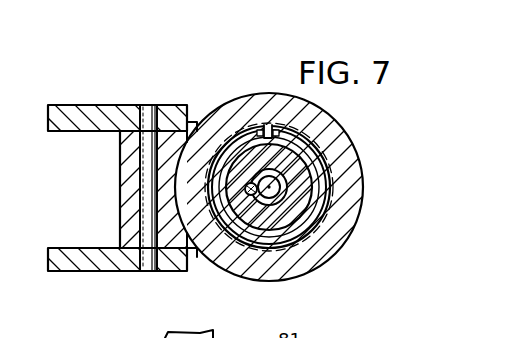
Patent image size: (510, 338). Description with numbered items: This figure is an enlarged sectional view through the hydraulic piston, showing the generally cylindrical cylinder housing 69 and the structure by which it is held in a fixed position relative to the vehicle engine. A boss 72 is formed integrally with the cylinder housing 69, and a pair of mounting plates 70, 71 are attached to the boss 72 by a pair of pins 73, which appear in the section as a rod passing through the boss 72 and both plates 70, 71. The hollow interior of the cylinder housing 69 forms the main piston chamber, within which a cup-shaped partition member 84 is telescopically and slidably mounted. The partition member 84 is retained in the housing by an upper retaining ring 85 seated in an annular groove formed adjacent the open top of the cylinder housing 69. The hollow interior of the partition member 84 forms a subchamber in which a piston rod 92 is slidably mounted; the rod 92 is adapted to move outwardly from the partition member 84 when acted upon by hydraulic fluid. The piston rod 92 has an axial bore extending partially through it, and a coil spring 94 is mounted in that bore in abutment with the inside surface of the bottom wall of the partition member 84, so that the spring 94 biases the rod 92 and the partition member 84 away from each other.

The cylinder housing 69 is at (332, 228).
The mounting plate 70 is at (62, 263).
The mounting plate 71 is at (77, 108).
The boss 72 is at (128, 197).
The pin 73 is at (148, 112).
The partition member 84 is at (314, 177).
The upper retaining ring 85 is at (259, 130).
The piston rod 92 is at (275, 224).
The coil spring 94 is at (253, 195).